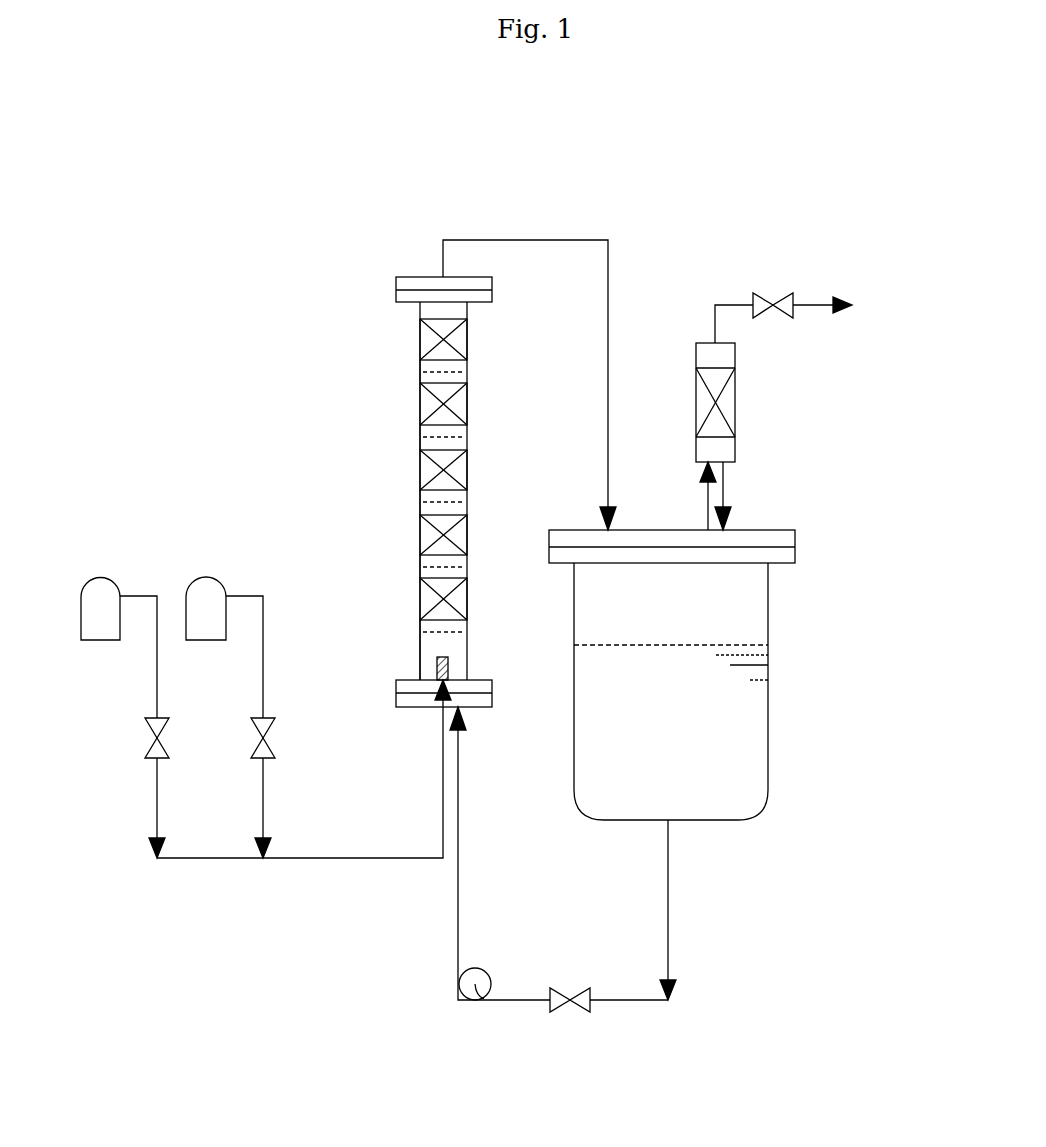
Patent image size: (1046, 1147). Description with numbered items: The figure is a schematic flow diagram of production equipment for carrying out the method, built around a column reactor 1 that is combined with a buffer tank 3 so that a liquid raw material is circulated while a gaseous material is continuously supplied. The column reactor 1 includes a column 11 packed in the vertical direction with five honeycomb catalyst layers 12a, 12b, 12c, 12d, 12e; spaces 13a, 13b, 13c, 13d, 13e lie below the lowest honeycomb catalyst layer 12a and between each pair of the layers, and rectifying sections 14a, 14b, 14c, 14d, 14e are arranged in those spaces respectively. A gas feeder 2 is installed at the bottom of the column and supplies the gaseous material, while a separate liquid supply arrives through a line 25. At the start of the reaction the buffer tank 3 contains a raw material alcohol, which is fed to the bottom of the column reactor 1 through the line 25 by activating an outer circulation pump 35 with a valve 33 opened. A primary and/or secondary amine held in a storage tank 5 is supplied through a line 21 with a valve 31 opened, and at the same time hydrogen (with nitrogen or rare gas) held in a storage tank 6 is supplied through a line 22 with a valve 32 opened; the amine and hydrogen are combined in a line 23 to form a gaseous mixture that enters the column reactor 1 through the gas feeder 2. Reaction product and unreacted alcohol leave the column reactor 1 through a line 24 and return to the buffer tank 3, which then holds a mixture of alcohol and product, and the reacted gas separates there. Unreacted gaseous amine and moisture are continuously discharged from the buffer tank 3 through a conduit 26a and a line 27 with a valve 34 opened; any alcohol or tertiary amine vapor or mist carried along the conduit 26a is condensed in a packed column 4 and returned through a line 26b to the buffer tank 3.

The column reactor 1 is at (435, 490).
The gas feeder 2 is at (448, 663).
The buffer tank 3 is at (768, 735).
The packed column 4 is at (735, 395).
The primary or secondary amine storage tank 5 is at (98, 577).
The hydrogen tank 6 is at (205, 577).
The column 11 is at (420, 403).
The honeycomb catalyst layer 12a is at (458, 602).
The honeycomb catalyst layer 12b is at (458, 535).
The honeycomb catalyst layer 12c is at (458, 470).
The honeycomb catalyst layer 12d is at (458, 399).
The honeycomb catalyst layer 12e is at (460, 343).
The space 13a is at (427, 640).
The space 13b is at (427, 568).
The space 13c is at (427, 505).
The space 13d is at (427, 441).
The space 13e is at (427, 372).
The rectifying section 14a is at (455, 632).
The rectifying section 14b is at (455, 566).
The rectifying section 14c is at (455, 501).
The rectifying section 14d is at (458, 437).
The rectifying section 14e is at (455, 371).
The line 21 is at (155, 686).
The line 22 is at (262, 692).
The line 23 is at (318, 858).
The line 24 is at (546, 240).
The line 25 is at (460, 908).
The conduit 26a is at (706, 501).
The line 26b is at (725, 496).
The line 27 is at (728, 305).
The valve 31 is at (150, 745).
The valve 32 is at (258, 745).
The valve 33 is at (575, 1012).
The valve 34 is at (777, 293).
The circulation pump 35 is at (490, 975).